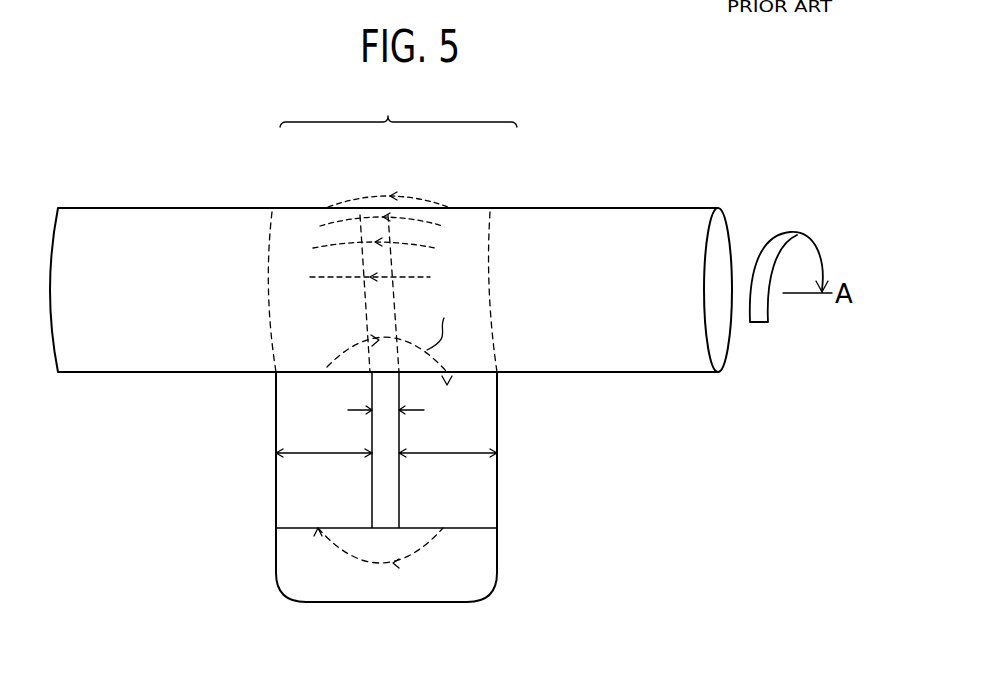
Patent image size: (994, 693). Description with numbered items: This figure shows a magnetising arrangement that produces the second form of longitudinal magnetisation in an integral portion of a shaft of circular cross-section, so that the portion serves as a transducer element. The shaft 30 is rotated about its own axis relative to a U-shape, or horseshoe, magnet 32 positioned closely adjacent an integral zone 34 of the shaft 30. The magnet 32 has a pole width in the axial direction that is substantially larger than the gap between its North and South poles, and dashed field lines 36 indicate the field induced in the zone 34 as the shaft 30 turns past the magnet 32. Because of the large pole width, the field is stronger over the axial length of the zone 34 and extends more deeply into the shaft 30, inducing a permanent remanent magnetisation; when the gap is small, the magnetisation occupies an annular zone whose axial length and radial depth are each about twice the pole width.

The shaft 30 is at (160, 208).
The U-shape (horseshoe) magnet 32 is at (276, 508).
The integral zone 34 is at (398, 107).
The magnetization pattern 36 is at (360, 200).